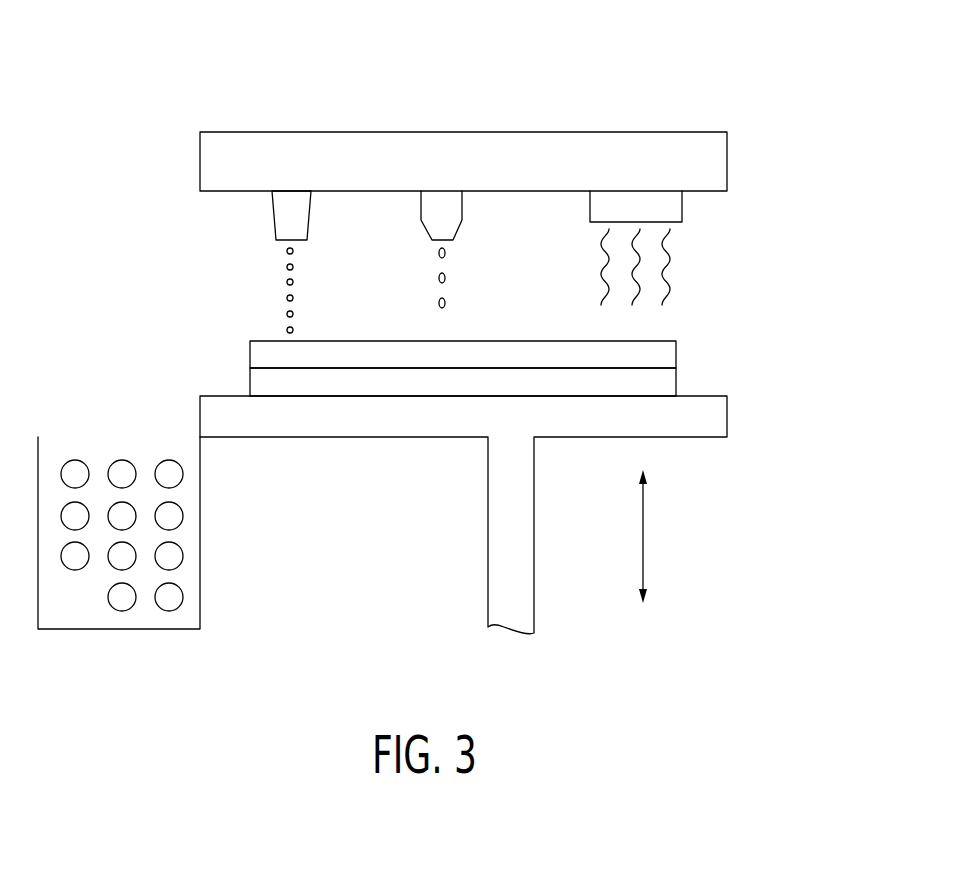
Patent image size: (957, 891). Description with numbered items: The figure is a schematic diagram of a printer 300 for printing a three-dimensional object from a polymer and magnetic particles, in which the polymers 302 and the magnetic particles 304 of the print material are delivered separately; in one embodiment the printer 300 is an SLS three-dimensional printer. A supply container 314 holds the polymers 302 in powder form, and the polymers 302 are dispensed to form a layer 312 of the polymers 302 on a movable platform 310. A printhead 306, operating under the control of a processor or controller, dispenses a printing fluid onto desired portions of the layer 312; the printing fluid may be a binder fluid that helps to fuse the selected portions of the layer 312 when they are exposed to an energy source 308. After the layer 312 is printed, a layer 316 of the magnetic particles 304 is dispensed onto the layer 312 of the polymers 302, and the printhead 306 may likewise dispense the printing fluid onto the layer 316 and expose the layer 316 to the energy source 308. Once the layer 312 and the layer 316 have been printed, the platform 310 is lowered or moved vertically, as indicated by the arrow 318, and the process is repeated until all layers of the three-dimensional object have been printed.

The printer 300 is at (690, 78).
The polymers 302 is at (74, 460).
The magnetic particles 304 is at (287, 252).
The printhead 306 is at (421, 220).
The energy source 308 is at (682, 205).
The movable platform 310 is at (717, 417).
The layer of the polymers 312 is at (667, 382).
The supply container 314 is at (200, 535).
The layer of the magnetic particles 316 is at (667, 353).
The arrow 318 is at (643, 530).